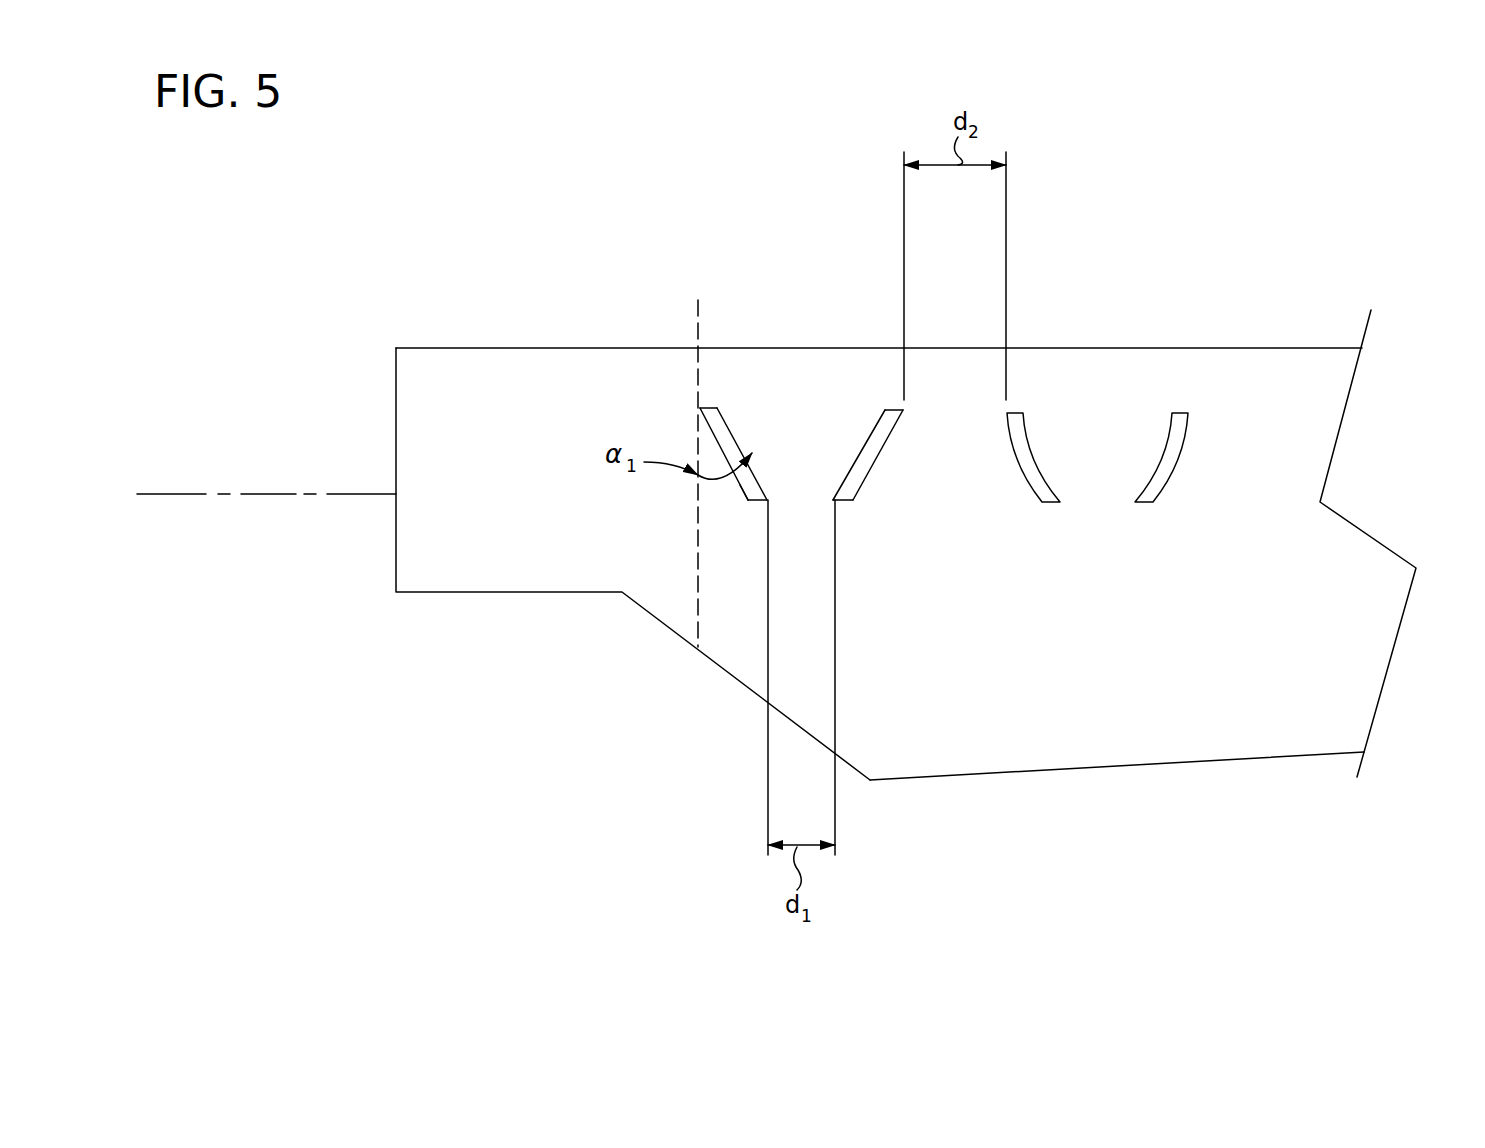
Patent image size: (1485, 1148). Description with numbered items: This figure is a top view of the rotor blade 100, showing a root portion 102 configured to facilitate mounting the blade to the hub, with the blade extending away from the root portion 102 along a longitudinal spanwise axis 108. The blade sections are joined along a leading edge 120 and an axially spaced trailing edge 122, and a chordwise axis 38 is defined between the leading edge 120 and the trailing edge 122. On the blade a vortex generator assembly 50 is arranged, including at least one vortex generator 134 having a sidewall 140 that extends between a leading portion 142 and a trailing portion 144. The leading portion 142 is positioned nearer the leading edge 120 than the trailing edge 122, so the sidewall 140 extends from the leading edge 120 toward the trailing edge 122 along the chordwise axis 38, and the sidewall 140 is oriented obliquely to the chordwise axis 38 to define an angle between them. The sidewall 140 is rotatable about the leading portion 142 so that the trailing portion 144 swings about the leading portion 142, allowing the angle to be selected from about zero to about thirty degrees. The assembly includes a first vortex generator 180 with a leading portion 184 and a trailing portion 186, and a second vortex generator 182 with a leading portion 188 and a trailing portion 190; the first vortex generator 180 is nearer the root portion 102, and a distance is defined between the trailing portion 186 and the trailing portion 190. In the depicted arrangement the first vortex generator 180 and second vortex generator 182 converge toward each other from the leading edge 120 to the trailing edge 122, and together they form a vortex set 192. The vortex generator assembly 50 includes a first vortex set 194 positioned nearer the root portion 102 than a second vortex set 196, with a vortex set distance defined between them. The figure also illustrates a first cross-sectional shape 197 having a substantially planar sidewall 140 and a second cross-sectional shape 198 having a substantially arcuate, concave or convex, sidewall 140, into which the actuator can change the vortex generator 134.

The rotor blade 100 is at (1305, 183).
The root portion 102 is at (517, 313).
The longitudinal spanwise axis 108 is at (199, 494).
The leading edge 120 is at (1325, 348).
The trailing edge 122 is at (1228, 760).
The vortex generator 134 is at (694, 549).
The sidewall 140 is at (949, 550).
The leading portion 142 is at (712, 408).
The trailing portion 144 is at (760, 502).
The first vortex generator 180 is at (745, 490).
The second vortex generator 182 is at (863, 482).
The leading portion of first vortex generator 184 is at (700, 408).
The trailing portion of first vortex generator 186 is at (748, 502).
The leading portion of second vortex generator 188 is at (918, 564).
The trailing portion of second vortex generator 190 is at (843, 503).
The vortex set 192 is at (782, 367).
The first vortex set 194 is at (815, 367).
The second vortex set 196 is at (1145, 378).
The first cross-sectional shape 197 is at (890, 437).
The second cross-sectional shape 198 is at (1027, 427).
The chordwise axis 38 is at (698, 300).
The vortex generator assembly 50 is at (758, 258).